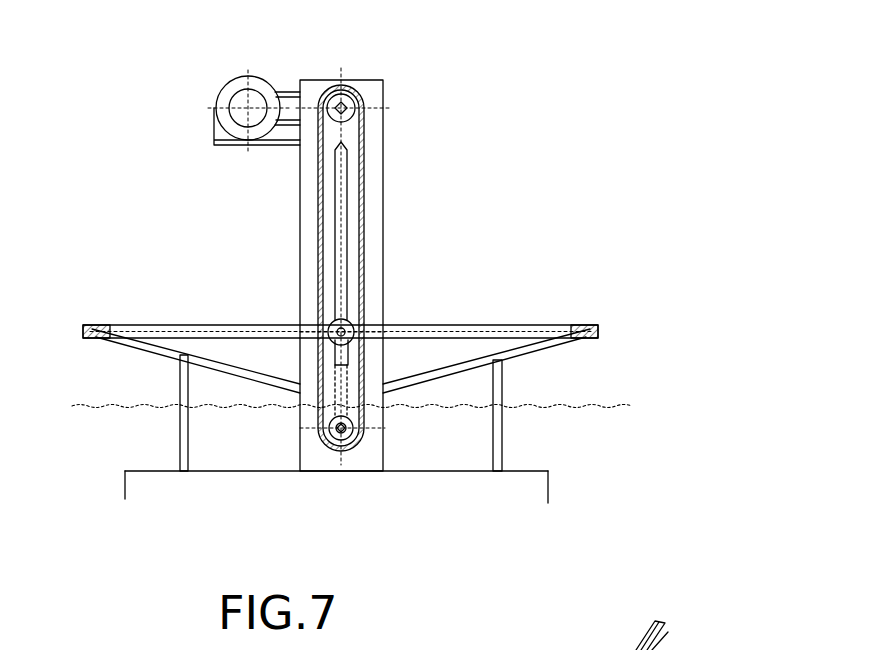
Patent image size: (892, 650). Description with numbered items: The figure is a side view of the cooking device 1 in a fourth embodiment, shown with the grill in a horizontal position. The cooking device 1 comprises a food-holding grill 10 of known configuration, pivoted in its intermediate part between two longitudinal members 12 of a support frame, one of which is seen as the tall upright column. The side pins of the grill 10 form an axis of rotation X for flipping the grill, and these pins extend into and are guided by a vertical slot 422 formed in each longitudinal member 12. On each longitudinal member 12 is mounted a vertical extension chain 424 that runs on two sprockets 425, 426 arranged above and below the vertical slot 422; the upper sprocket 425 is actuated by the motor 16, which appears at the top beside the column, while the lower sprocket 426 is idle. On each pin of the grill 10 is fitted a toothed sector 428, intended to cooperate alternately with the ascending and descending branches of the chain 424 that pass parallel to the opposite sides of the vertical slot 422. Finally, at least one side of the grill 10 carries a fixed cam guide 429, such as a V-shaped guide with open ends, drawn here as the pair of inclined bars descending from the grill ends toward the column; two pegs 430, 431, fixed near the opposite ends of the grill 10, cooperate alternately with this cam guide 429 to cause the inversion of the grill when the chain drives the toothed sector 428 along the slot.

The cooking device 1 is at (722, 118).
The food-holding grill 10 is at (503, 325).
The longitudinal member 12 is at (384, 132).
The motor 16 is at (258, 80).
The vertical slot 422 is at (333, 192).
The vertical extension chain 424 is at (364, 207).
The sprocket 425 is at (352, 94).
The sprocket 426 is at (343, 452).
The toothed sector 428 is at (362, 320).
The fixed cam guide 429 is at (521, 355).
The peg 430 is at (104, 326).
The peg 431 is at (575, 325).
The axis of rotation X is at (312, 314).